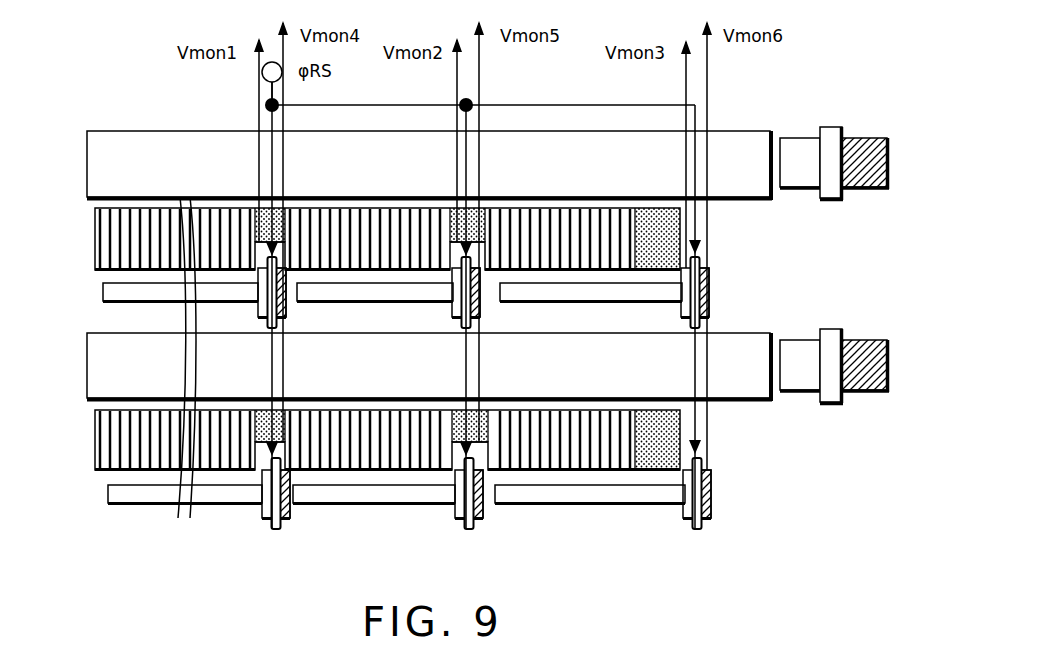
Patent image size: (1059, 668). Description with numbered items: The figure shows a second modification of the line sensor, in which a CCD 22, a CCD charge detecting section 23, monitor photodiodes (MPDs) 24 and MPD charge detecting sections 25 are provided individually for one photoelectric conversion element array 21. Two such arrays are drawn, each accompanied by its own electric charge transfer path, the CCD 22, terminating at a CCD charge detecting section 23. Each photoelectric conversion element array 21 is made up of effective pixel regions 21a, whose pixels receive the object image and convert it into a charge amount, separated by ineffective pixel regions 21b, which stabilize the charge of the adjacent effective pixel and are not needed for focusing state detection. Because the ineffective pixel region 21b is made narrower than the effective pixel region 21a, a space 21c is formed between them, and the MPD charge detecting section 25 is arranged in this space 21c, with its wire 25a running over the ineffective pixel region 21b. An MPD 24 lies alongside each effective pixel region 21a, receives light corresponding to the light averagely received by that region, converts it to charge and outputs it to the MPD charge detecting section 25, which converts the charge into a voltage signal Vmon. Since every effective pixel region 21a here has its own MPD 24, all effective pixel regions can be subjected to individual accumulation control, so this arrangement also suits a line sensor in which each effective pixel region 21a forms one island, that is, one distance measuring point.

The photoelectric conversion element array 21 is at (508, 452).
The effective pixel region 21a is at (392, 478).
The ineffective pixel region 21b is at (257, 428).
The space 21c is at (283, 457).
The electric charge transfer path (CCD) 22 is at (748, 198).
The CCD charge detecting section 23 is at (852, 126).
The monitor photodiode (MPD) 24 is at (597, 302).
The MPD charge detecting section 25 is at (710, 278).
The wire 25a is at (547, 104).